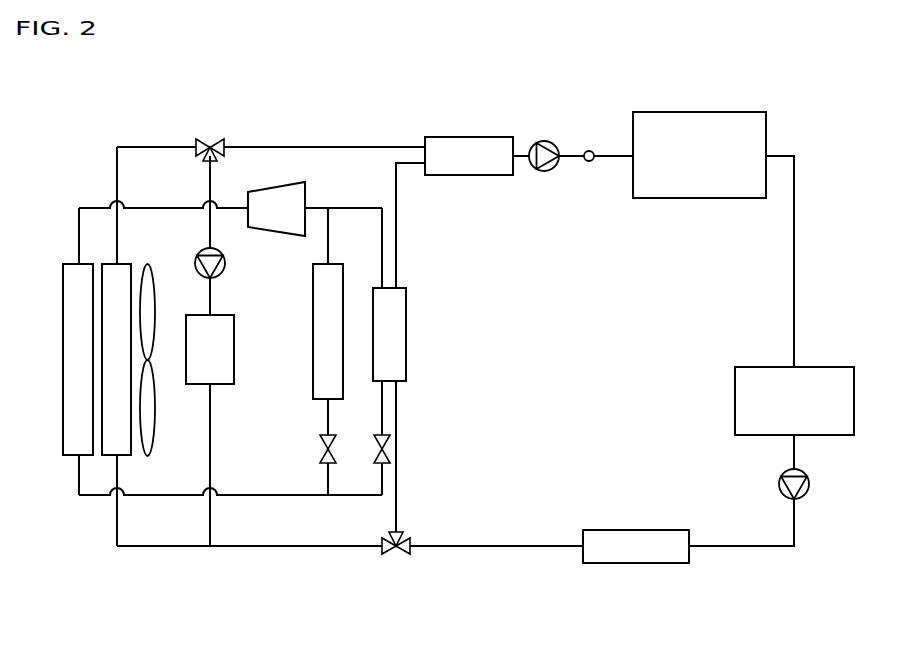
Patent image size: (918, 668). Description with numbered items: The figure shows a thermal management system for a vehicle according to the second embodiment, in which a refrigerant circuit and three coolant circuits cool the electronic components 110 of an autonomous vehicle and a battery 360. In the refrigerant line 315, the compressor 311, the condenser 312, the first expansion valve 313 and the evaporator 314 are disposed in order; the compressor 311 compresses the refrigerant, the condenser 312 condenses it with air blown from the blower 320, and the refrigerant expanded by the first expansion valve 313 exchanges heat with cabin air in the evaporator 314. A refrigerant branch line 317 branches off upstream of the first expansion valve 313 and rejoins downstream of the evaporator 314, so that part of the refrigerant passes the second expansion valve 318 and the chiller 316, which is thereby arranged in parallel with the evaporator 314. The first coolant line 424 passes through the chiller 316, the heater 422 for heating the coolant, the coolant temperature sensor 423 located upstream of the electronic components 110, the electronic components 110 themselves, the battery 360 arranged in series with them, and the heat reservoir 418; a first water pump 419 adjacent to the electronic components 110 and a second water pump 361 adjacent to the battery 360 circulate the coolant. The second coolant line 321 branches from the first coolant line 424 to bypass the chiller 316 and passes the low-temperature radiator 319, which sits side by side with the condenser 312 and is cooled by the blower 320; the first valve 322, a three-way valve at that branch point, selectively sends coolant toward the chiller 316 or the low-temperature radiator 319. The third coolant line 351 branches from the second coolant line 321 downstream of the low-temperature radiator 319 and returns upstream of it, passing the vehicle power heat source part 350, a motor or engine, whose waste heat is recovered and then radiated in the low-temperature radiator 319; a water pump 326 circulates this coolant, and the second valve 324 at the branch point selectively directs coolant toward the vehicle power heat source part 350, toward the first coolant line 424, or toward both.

The electronic components 110 is at (702, 110).
The compressor 311 is at (275, 188).
The condenser 312 is at (72, 457).
The first expansion valve 313 is at (320, 445).
The evaporator 314 is at (313, 331).
The refrigerant line 315 is at (163, 207).
The chiller 316 is at (407, 332).
The refrigerant branch line 317 is at (348, 497).
The second expansion valve 318 is at (377, 452).
The low-temperature radiator 319 is at (128, 458).
The blower 320 is at (172, 442).
The second coolant line 321 is at (248, 548).
The first valve 322 is at (400, 555).
The second valve 324 is at (218, 140).
The water pump 326 is at (215, 278).
The vehicle power heat source part 350 is at (218, 387).
The third coolant line 351 is at (212, 475).
The battery 360 is at (735, 402).
The second water pump 361 is at (780, 487).
The heat reservoir 418 is at (638, 565).
The first water pump 419 is at (540, 137).
The heater 422 is at (468, 137).
The coolant temperature sensor 423 is at (589, 148).
The first coolant line 424 is at (794, 315).